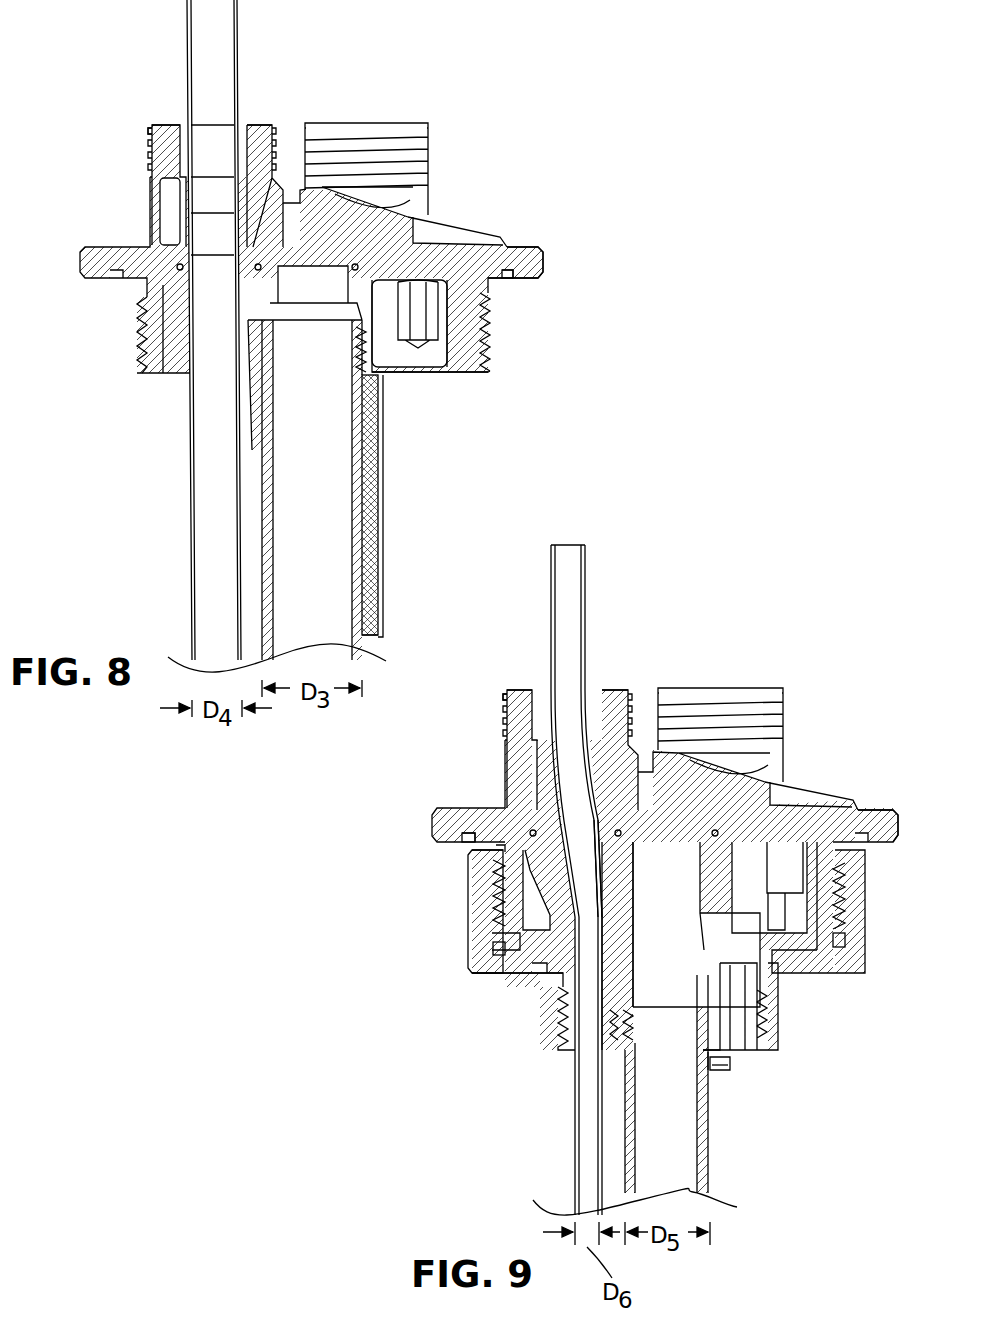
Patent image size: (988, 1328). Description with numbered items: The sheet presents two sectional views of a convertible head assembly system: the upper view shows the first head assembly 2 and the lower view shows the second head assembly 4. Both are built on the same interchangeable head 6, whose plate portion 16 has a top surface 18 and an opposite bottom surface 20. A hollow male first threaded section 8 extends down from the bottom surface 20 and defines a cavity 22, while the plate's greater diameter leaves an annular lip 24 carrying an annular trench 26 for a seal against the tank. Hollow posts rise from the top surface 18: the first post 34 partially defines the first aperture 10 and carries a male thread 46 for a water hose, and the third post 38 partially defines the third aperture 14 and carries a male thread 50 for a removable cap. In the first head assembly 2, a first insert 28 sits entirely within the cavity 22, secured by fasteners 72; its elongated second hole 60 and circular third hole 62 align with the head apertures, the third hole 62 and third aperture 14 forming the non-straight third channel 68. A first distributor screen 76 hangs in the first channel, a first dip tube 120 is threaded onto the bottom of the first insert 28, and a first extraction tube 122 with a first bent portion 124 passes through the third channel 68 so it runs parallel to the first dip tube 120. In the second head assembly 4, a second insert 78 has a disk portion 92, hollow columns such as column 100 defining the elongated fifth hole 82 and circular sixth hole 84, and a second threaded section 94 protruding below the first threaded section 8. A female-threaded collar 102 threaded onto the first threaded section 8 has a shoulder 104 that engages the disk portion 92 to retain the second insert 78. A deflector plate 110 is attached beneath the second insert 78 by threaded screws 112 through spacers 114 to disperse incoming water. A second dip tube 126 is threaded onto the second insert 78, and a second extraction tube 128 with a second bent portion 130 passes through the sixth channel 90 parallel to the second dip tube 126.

In FIG. 8, the first head assembly 2 is at (456, 62).
In FIG. 9, the second head assembly 4 is at (830, 618).
In FIG. 8, the interchangeable head 6 is at (390, 214).
In FIG. 9, the interchangeable head 6 is at (742, 780).
In FIG. 8, the first threaded section 8 is at (490, 327).
In FIG. 9, the first threaded section 8 is at (845, 908).
In FIG. 8, the first aperture 10 is at (370, 120).
In FIG. 9, the first aperture 10 is at (752, 686).
In FIG. 8, the third aperture 14 is at (181, 123).
In FIG. 9, the third aperture 14 is at (541, 688).
In FIG. 8, the plate portion 16 is at (446, 250).
In FIG. 9, the plate portion 16 is at (792, 822).
In FIG. 8, the top surface 18 is at (108, 246).
In FIG. 9, the top surface 18 is at (478, 805).
In FIG. 8, the bottom surface 20 is at (494, 296).
In FIG. 9, the bottom surface 20 is at (442, 852).
In FIG. 8, the cavity 22 is at (455, 348).
In FIG. 9, the cavity 22 is at (820, 952).
In FIG. 8, the annular lip 24 is at (515, 248).
In FIG. 9, the annular lip 24 is at (862, 814).
In FIG. 8, the annular trench 26 is at (510, 280).
In FIG. 9, the annular trench 26 is at (468, 836).
In FIG. 8, the first insert 28 is at (166, 360).
In FIG. 8, the first post 34 is at (429, 172).
In FIG. 9, the first post 34 is at (785, 740).
In FIG. 8, the third post 38 is at (162, 176).
In FIG. 9, the third post 38 is at (520, 764).
In FIG. 8, the male thread 46 is at (306, 133).
In FIG. 9, the male thread 46 is at (659, 700).
In FIG. 8, the male thread 50 is at (150, 150).
In FIG. 9, the male thread 50 is at (505, 720).
In FIG. 8, the second hole 60 is at (380, 398).
In FIG. 8, the third hole 62 is at (242, 382).
In FIG. 8, the third channel 68 is at (253, 238).
In FIG. 8, the fasteners 72 is at (426, 346).
In FIG. 8, the first distributor screen 76 is at (386, 507).
In FIG. 9, the second insert 78 is at (722, 916).
In FIG. 9, the fifth hole 82 is at (672, 982).
In FIG. 9, the sixth hole 84 is at (600, 1056).
In FIG. 9, the sixth channel 90 is at (600, 790).
In FIG. 9, the disk portion 92 is at (500, 952).
In FIG. 9, the second threaded section 94 is at (560, 1020).
In FIG. 9, the hollow column 100 is at (546, 912).
In FIG. 9, the female-threaded collar 102 is at (480, 906).
In FIG. 9, the shoulder 104 is at (506, 976).
In FIG. 9, the deflector plate 110 is at (722, 1072).
In FIG. 9, the threaded screws 112 is at (726, 1070).
In FIG. 9, the spacers 114 is at (742, 1062).
In FIG. 8, the first dip tube 120 is at (364, 646).
In FIG. 8, the first extraction tube 122 is at (186, 30).
In FIG. 8, the first bent portion 124 is at (162, 201).
In FIG. 9, the second dip tube 126 is at (710, 1160).
In FIG. 9, the second extraction tube 128 is at (550, 611).
In FIG. 9, the second bent portion 130 is at (502, 855).